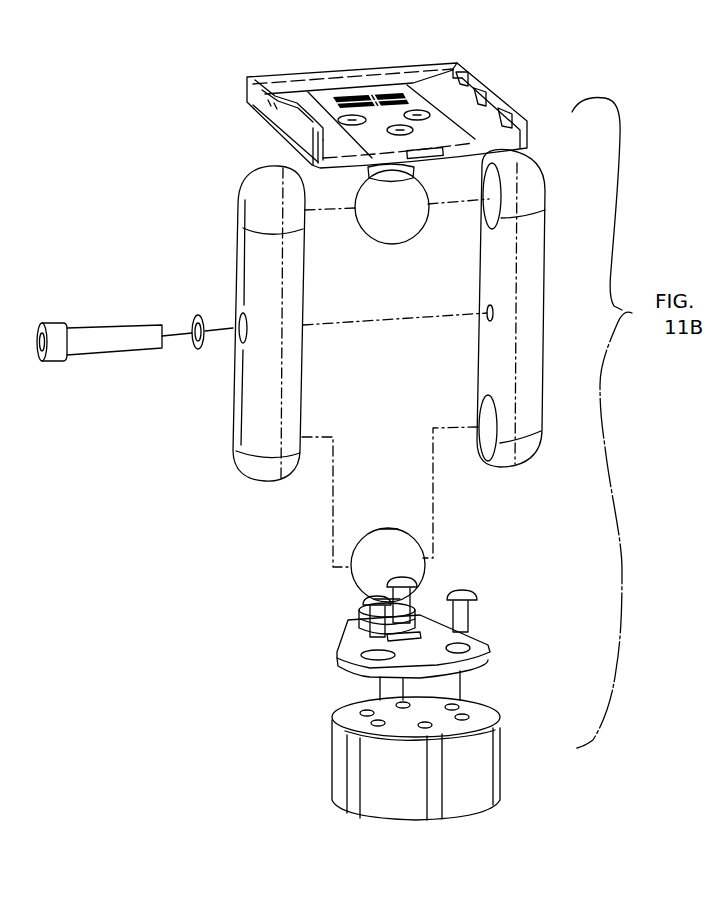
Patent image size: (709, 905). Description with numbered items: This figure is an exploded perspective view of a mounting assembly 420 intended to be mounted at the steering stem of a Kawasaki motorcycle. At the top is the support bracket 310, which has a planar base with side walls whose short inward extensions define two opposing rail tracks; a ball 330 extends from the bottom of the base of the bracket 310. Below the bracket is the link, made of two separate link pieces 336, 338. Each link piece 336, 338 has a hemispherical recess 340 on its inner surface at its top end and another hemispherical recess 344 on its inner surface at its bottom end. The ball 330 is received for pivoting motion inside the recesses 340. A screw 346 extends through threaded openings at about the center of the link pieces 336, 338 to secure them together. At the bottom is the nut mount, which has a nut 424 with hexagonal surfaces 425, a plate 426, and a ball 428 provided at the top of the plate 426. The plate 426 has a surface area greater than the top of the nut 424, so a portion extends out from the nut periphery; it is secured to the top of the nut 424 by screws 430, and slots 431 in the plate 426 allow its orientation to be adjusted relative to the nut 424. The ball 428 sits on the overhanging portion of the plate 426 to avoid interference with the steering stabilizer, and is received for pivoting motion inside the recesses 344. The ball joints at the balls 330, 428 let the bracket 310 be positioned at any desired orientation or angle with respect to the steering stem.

The support bracket 310 is at (404, 62).
The ball 330 is at (392, 230).
The link piece 336 is at (238, 252).
The link piece 338 is at (533, 253).
The hemispherical recess 340 is at (497, 186).
The hemispherical recess 344 is at (483, 408).
The screw 346 is at (120, 338).
The mounting assembly 420 is at (620, 423).
The nut 424 is at (337, 762).
The hexagonal surfaces 425 is at (395, 795).
The plate 426 is at (487, 648).
The ball 428 is at (368, 567).
The screws 430 is at (470, 595).
The slots 431 is at (363, 655).